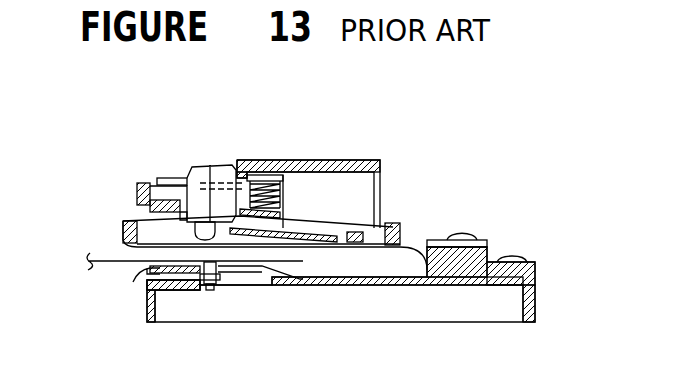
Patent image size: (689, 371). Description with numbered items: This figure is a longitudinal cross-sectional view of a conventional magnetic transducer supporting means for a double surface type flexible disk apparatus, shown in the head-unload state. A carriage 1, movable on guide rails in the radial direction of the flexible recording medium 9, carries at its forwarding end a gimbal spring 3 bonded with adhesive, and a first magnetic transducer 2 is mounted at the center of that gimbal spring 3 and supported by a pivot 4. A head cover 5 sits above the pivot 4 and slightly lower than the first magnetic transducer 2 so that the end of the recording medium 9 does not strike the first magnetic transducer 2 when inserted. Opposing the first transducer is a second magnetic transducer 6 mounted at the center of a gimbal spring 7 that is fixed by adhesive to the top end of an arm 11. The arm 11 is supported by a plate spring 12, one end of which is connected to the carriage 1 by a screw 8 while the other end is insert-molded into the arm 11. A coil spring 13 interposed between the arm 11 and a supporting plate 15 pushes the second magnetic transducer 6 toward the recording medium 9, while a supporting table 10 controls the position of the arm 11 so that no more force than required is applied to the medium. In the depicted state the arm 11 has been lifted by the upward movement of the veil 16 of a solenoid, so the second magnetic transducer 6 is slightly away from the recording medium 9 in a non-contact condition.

The carriage 1 is at (535, 300).
The first magnetic transducer 2 is at (213, 290).
The gimbal spring 3 is at (250, 278).
The pivot 4 is at (184, 290).
The head cover 5 is at (152, 270).
The second magnetic transducer 6 is at (212, 205).
The gimbal spring 7 is at (157, 222).
The screw 8 is at (477, 236).
The flexible recording medium 9 is at (105, 264).
The supporting table 10 is at (138, 183).
The arm 11 is at (392, 226).
The plate spring 12 is at (413, 240).
The coil spring 13 is at (280, 173).
The supporting plate 15 is at (327, 161).
The veil 16 is at (170, 178).